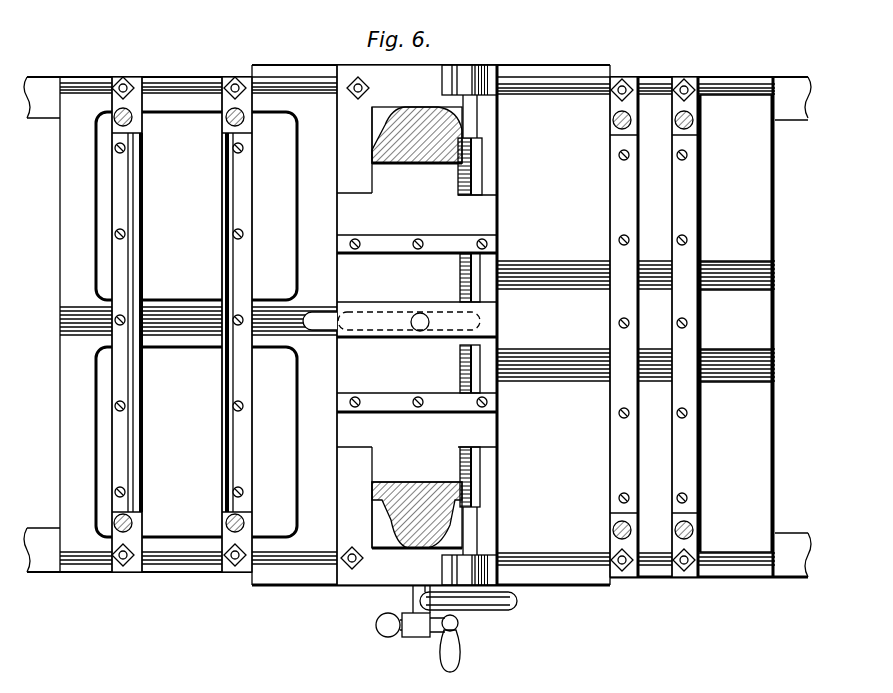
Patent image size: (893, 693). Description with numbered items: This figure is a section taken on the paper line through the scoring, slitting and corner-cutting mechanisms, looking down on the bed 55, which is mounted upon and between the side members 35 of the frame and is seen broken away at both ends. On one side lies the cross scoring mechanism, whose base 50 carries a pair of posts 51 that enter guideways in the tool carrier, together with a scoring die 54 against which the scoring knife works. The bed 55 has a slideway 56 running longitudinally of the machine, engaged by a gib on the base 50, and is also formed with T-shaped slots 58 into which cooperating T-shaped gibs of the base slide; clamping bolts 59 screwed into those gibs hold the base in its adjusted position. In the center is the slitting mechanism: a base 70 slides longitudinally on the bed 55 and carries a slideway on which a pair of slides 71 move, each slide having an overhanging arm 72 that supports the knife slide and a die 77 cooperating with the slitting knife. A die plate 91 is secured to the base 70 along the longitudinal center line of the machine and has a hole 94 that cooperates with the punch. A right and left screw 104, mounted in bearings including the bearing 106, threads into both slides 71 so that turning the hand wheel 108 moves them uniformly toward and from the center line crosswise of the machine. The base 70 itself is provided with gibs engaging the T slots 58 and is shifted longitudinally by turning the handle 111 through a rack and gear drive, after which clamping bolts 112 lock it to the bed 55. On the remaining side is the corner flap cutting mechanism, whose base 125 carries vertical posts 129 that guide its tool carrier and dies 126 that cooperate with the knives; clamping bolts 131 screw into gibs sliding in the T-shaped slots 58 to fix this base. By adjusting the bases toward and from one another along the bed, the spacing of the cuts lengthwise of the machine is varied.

The side members 35 is at (53, 113).
The base 50 is at (218, 461).
The posts 51 is at (225, 120).
The scoring die 54 is at (240, 421).
The bed 55 is at (62, 218).
The slideway 56 is at (183, 314).
The T-shaped slots 58 is at (185, 84).
The clamping bolts 59 is at (121, 570).
The base 70 is at (487, 140).
The slides 71 is at (417, 325).
The overhanging arm 72 is at (420, 107).
The die 77 is at (399, 249).
The die plate 91 is at (483, 322).
The hole 94 is at (421, 313).
The right and left screw 104 is at (480, 470).
The bearing 106 is at (488, 65).
The hand wheel 108 is at (517, 603).
The handle 111 is at (461, 651).
The clamping bolts 112 is at (358, 77).
The base 125 is at (614, 110).
The dies 126 is at (613, 213).
The vertical posts 129 is at (614, 125).
The clamping bolts 131 is at (626, 82).